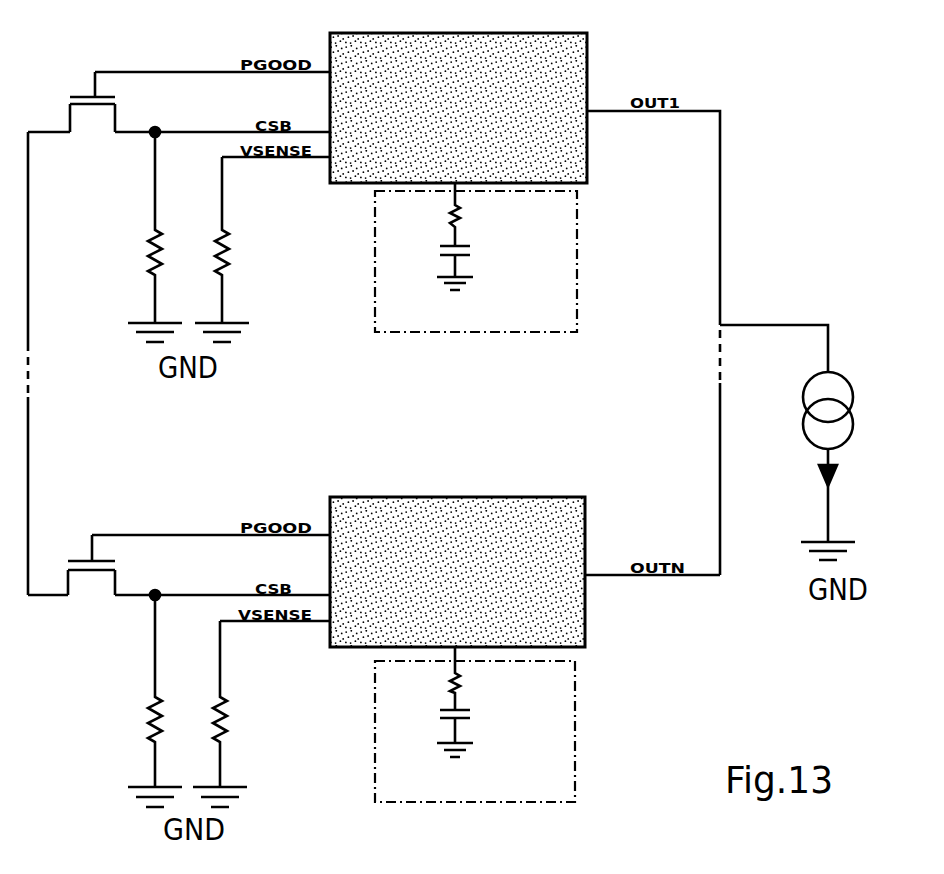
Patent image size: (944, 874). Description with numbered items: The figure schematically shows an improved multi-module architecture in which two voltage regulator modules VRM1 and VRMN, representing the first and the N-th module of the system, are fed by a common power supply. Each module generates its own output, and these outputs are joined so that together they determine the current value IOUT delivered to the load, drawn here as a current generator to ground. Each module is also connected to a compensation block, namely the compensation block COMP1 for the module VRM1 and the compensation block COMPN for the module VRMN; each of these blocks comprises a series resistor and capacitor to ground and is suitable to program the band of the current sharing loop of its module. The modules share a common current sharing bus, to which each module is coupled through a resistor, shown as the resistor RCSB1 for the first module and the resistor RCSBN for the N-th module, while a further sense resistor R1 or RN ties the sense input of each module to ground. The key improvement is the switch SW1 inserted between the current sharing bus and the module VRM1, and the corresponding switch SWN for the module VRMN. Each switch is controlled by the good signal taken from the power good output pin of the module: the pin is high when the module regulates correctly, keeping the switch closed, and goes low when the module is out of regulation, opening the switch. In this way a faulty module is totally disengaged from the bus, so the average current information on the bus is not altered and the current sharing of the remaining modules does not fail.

The switch SW1 is at (71, 97).
The switch SWN is at (75, 593).
The current share bus resistor RCSB RCSB1 is at (118, 237).
The current share bus resistor RCSB RCSBN is at (117, 701).
The sense resistor R1 is at (229, 249).
The sense resistor RN is at (229, 714).
The voltage regulator module VRM1 is at (458, 108).
The voltage regulator module VRMN is at (457, 572).
The compensation block COMP1 is at (528, 261).
The compensation block COMPN is at (524, 724).
The current value IOUT is at (817, 442).